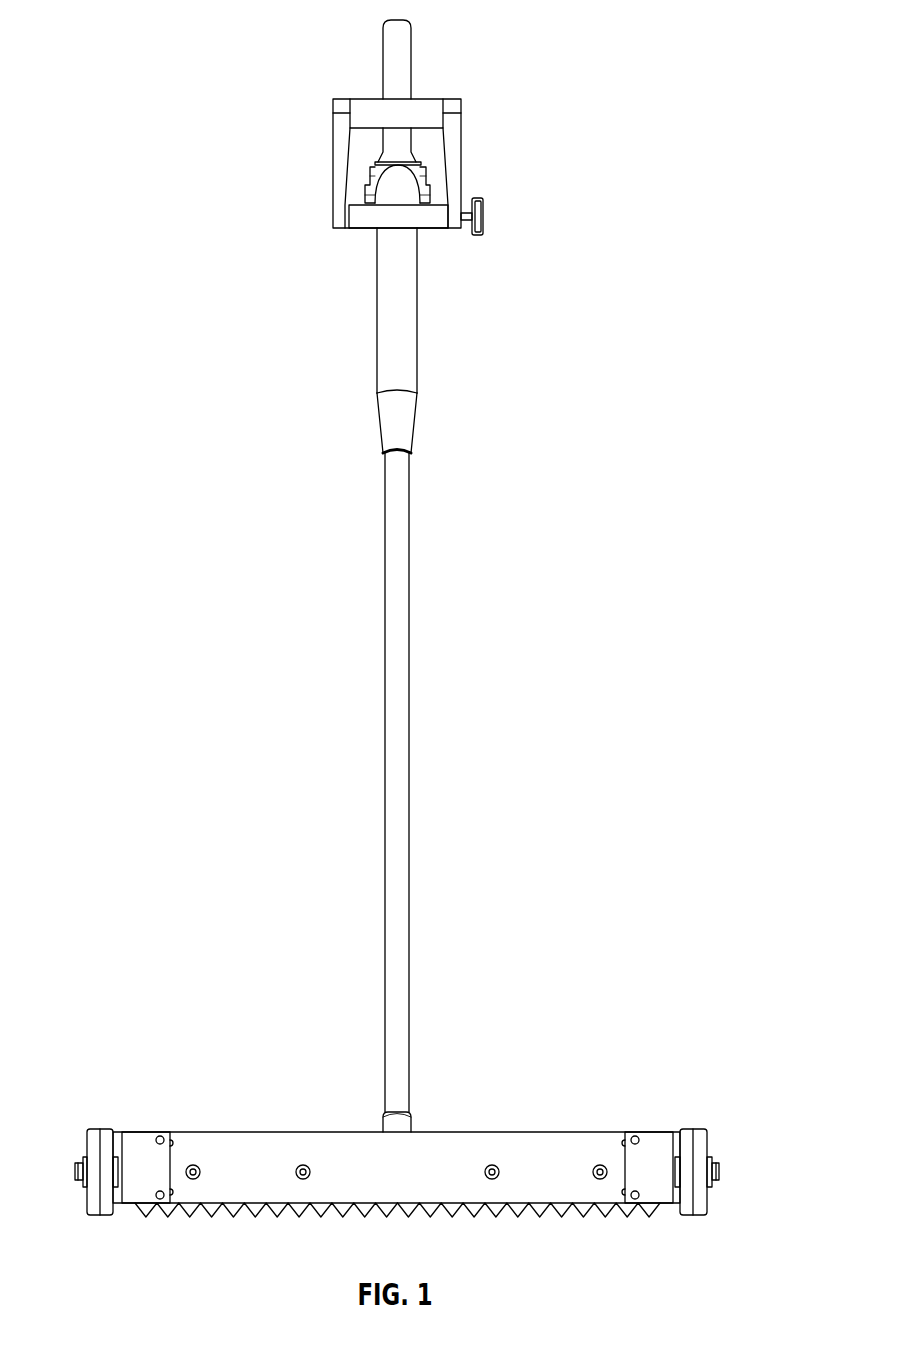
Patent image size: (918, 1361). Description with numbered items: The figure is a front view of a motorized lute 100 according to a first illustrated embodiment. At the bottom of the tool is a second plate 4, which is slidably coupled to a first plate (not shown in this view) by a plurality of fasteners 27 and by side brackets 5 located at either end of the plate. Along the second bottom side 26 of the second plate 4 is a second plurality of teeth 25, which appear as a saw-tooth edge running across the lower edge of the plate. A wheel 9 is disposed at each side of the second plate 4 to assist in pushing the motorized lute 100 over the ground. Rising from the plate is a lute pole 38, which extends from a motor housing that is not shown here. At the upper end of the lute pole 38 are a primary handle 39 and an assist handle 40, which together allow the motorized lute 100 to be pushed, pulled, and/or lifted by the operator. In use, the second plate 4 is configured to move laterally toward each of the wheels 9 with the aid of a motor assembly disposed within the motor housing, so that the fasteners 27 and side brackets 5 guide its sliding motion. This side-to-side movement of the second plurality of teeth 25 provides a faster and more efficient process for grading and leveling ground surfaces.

The motorized lute 100 is at (497, 46).
The primary handle 39 is at (383, 69).
The assist handle 40 is at (332, 163).
The lute pole 38 is at (409, 703).
The second plate 4 is at (412, 1193).
The fasteners 27 is at (303, 1165).
The side brackets 5 is at (143, 1132).
The wheel 9 is at (100, 1215).
The second bottom side 26 is at (288, 1203).
The second plurality of teeth 25 is at (537, 1208).